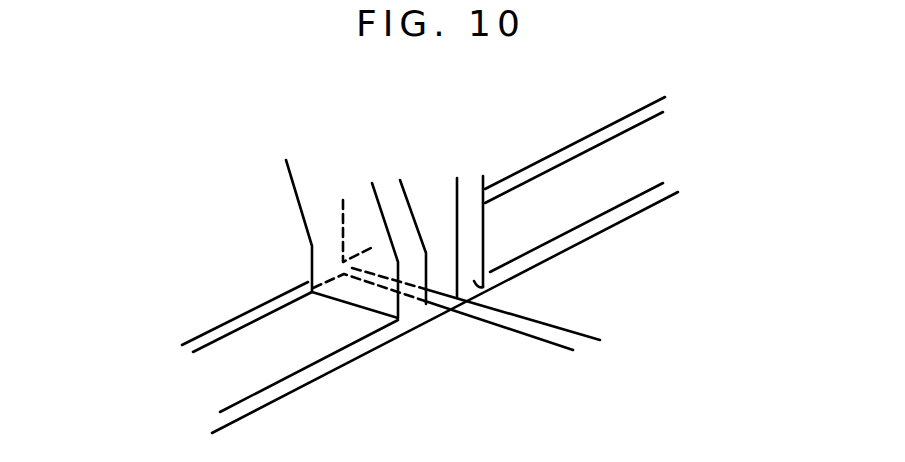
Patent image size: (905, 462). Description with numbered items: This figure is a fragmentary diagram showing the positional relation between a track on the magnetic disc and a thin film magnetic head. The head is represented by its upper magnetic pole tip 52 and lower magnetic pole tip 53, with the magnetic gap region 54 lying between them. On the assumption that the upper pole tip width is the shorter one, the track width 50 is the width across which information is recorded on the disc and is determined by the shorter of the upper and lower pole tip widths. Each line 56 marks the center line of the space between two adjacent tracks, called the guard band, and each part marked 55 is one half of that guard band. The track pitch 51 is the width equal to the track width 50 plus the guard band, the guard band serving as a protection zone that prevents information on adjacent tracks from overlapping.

The track width 50 is at (283, 379).
The track pitch 51 is at (366, 349).
The upper magnetic pole tip 52 is at (406, 304).
The lower magnetic pole tip 53 is at (484, 287).
The magnetic gap region 54 is at (618, 323).
The one half of the guard band 55 is at (519, 172).
The center line of the guard band 56 is at (645, 106).